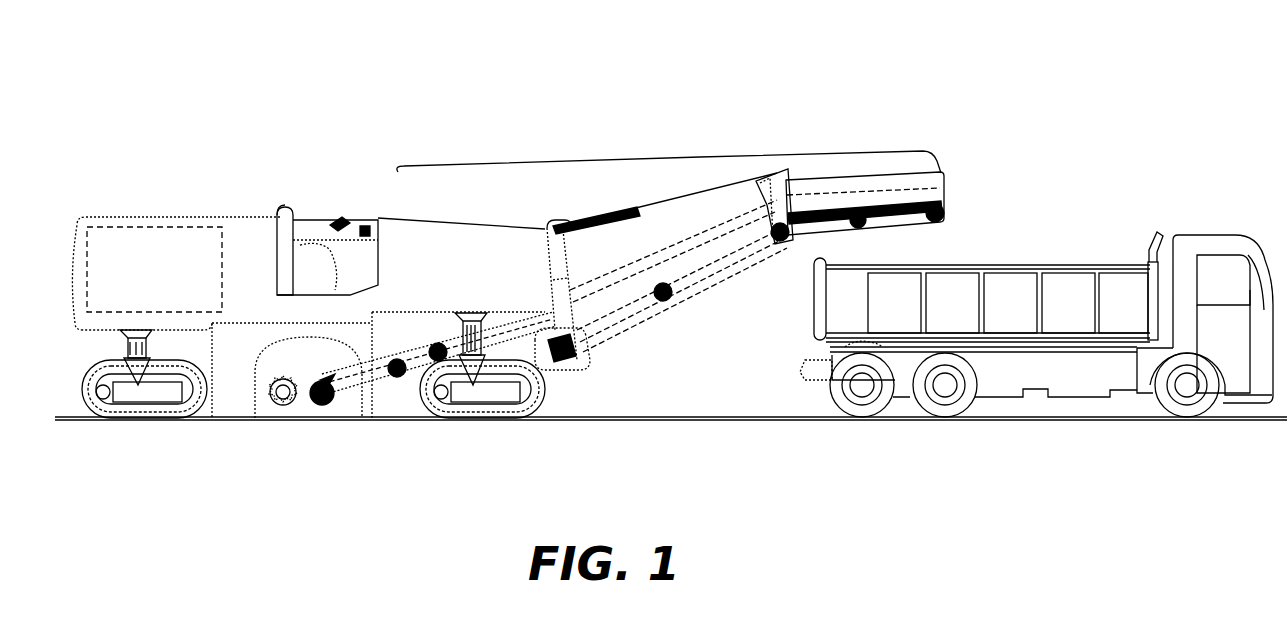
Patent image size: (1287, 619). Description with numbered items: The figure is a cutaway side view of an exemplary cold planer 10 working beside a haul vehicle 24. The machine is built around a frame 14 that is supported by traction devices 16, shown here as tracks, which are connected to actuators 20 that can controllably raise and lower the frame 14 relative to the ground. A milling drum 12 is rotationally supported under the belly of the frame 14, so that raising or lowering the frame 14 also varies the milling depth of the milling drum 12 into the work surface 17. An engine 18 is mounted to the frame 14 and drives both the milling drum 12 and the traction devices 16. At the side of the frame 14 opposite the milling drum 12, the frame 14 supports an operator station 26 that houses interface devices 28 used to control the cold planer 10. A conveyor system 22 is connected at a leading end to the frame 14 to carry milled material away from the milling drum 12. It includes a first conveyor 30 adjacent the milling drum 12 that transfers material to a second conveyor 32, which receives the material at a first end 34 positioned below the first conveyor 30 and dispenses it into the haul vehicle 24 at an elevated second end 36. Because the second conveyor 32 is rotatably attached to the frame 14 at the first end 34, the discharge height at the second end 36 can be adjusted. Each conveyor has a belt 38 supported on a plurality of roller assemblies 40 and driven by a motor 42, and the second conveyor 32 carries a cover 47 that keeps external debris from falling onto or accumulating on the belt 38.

The cold planer 10 is at (553, 87).
The milling drum 12 is at (305, 415).
The frame 14 is at (397, 217).
The traction devices 16 is at (203, 420).
The work surface 17 is at (638, 412).
The engine 18 is at (113, 225).
The actuators 20 is at (136, 374).
The conveyor system 22 is at (665, 151).
The haul vehicle 24 is at (1035, 212).
The operator station 26 is at (280, 170).
The interface devices 28 is at (330, 220).
The first conveyor 30 is at (385, 398).
The second conveyor 32 is at (738, 292).
The first end 34 is at (598, 352).
The second end 36 is at (958, 213).
The belt 38 is at (410, 358).
The roller assemblies 40 is at (667, 302).
The motor 42 is at (565, 372).
The cover 47 is at (937, 178).